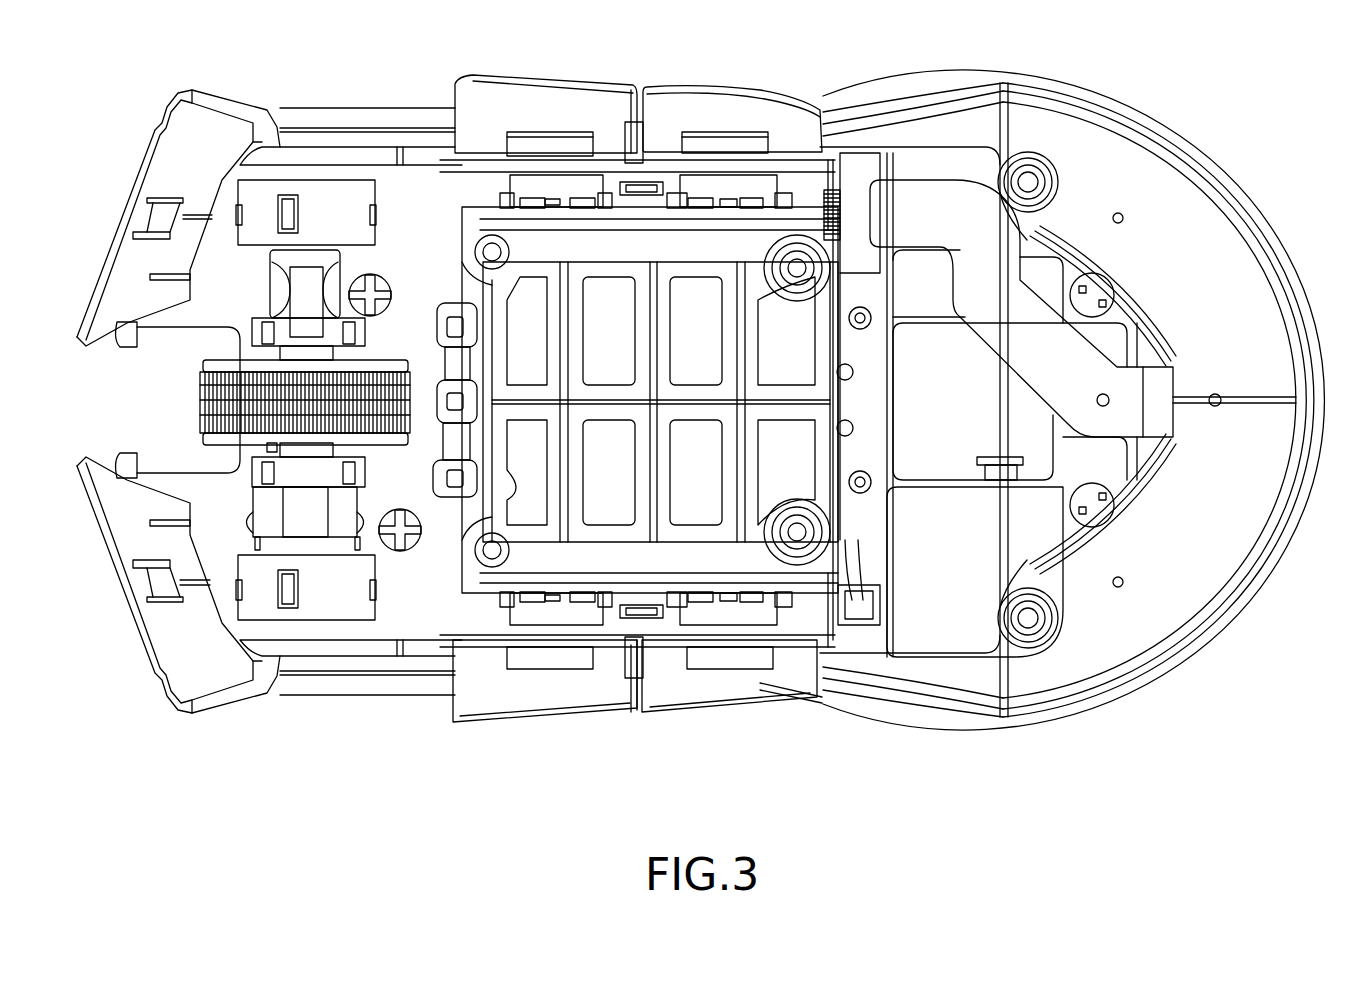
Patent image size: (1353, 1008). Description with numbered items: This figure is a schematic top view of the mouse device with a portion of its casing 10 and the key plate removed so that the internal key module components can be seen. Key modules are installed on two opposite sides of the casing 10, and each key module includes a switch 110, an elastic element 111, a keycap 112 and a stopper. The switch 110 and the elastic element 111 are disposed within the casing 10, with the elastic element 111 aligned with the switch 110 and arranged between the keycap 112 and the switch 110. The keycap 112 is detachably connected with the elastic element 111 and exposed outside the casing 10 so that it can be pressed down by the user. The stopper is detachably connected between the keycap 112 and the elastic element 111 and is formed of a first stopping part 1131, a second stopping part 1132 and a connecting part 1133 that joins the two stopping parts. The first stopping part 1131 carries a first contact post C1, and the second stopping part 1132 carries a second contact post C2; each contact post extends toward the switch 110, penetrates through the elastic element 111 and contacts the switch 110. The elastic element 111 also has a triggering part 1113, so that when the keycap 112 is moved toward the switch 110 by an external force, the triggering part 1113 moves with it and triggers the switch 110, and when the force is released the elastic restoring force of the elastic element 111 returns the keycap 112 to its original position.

The casing 10 is at (972, 82).
The switch 110 is at (580, 613).
The first stopping part 1131 is at (490, 633).
The second stopping part 1132 is at (627, 637).
The first contact post C1 is at (545, 681).
The second contact post C2 is at (729, 676).
The connecting part 1133 is at (550, 662).
The keycap 112 is at (570, 702).
The triggering part 1113 is at (585, 640).
The elastic element 111 is at (791, 693).